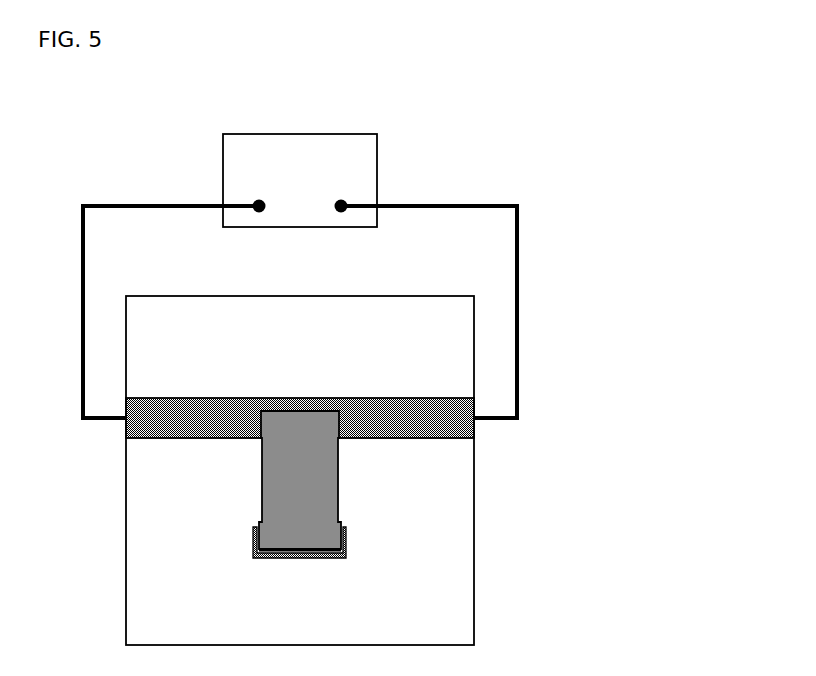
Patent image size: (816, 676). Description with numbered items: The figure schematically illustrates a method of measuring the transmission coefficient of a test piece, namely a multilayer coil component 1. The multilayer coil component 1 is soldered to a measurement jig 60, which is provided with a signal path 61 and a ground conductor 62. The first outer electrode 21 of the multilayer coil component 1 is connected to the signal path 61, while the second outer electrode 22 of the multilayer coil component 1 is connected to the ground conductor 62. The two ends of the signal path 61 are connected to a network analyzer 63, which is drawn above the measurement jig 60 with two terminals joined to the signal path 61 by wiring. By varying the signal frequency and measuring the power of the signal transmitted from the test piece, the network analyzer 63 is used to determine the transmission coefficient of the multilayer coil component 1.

The multilayer coil component 1 is at (326, 477).
The first outer electrode 21 is at (275, 410).
The second outer electrode 22 is at (280, 551).
The measurement jig 60 is at (178, 294).
The signal path 61 is at (402, 410).
The ground conductor 62 is at (327, 557).
The network analyzer 63 is at (345, 141).